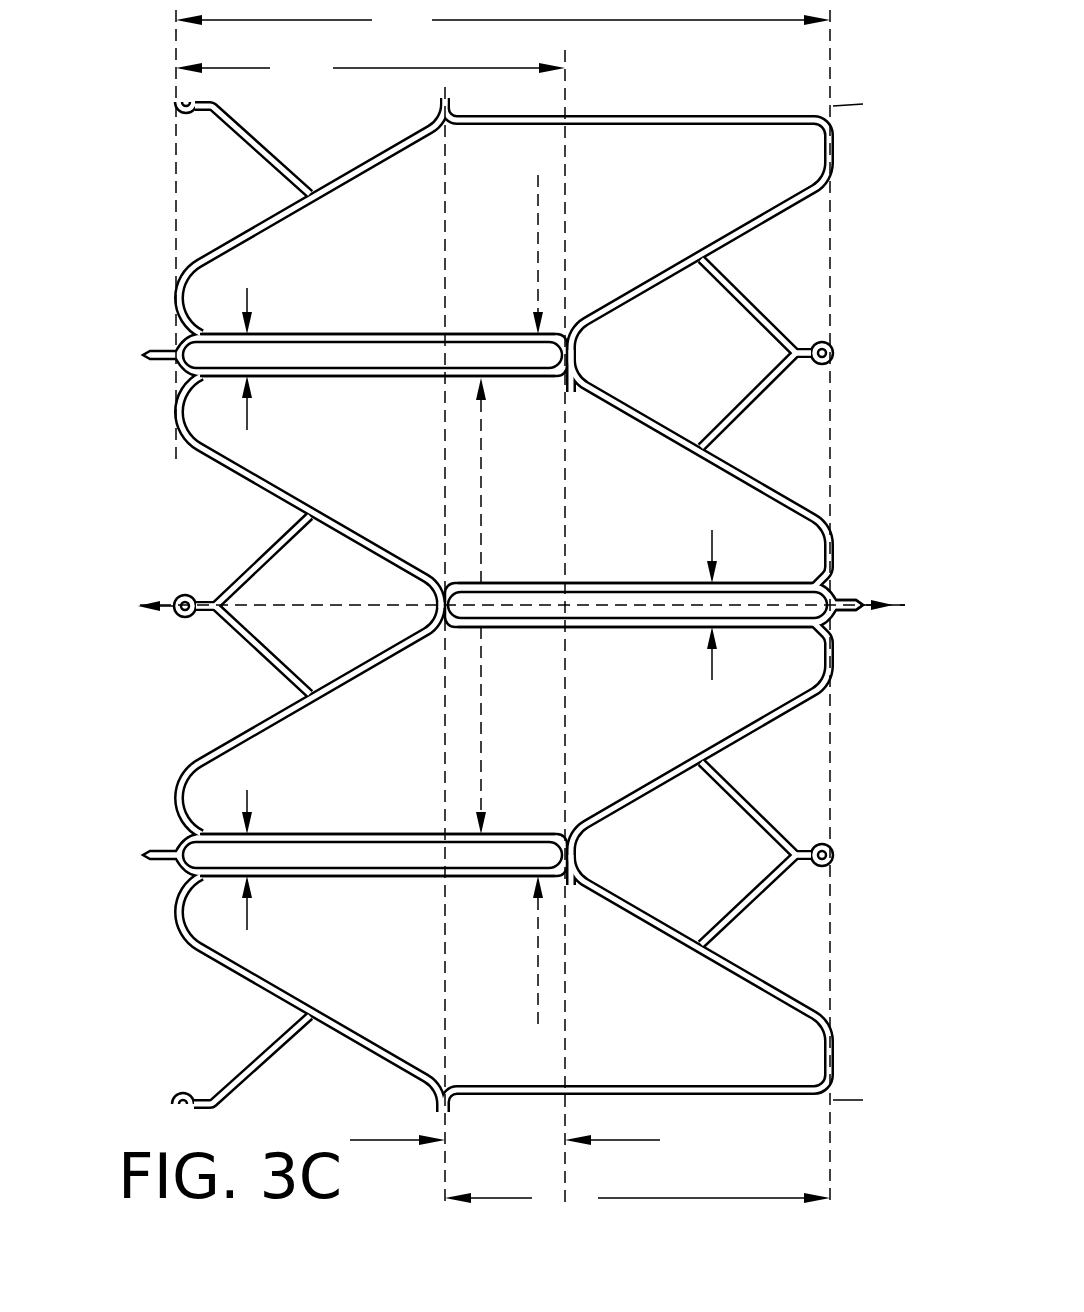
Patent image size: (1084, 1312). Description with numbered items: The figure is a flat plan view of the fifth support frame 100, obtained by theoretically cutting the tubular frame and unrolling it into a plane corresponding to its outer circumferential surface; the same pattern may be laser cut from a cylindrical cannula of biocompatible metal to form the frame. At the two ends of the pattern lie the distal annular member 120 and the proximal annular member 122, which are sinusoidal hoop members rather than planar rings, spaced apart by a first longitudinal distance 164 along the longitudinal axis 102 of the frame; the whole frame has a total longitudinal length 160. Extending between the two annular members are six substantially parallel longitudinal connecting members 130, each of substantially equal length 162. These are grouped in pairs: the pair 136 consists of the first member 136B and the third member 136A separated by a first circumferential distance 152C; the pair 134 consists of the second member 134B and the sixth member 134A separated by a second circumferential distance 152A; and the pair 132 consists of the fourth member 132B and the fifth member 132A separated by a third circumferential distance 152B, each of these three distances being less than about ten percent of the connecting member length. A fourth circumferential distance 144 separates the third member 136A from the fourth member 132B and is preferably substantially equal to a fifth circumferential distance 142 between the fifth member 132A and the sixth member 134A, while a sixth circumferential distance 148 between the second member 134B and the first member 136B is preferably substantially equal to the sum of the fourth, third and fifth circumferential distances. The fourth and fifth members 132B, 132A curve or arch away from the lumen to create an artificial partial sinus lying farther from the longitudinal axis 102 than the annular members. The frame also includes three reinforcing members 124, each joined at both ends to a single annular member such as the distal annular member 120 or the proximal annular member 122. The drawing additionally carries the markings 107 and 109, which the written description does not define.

The fifth support frame 100 is at (501, 608).
The longitudinal axis 102 is at (871, 604).
The first end direction 107 is at (160, 602).
The second end direction 109 is at (900, 603).
The distal annular member 120 is at (182, 490).
The proximal annular member 122 is at (817, 480).
The reinforcing members 124 is at (751, 306).
The longitudinal connecting members 130 is at (669, 88).
The longitudinal connecting member pair 132 is at (654, 605).
The fifth member 132A is at (687, 582).
The fourth member 132B is at (688, 628).
The longitudinal connecting member pair 134 is at (355, 355).
The sixth member 134A is at (347, 378).
The second member 134B is at (347, 333).
The longitudinal connecting member pair 136 is at (355, 855).
The third member 136A is at (347, 833).
The first member 136B is at (347, 878).
The fifth circumferential distance 142 is at (482, 460).
The fourth circumferential distance 144 is at (483, 748).
The sixth circumferential distance 148 is at (536, 248).
The second circumferential distance 152A is at (247, 288).
The third circumferential distance 152B is at (716, 540).
The first circumferential distance 152C is at (247, 790).
The total longitudinal length 160 is at (503, 20).
The length of longitudinal connecting members 162 is at (503, 631).
The first longitudinal distance 164 is at (505, 1138).